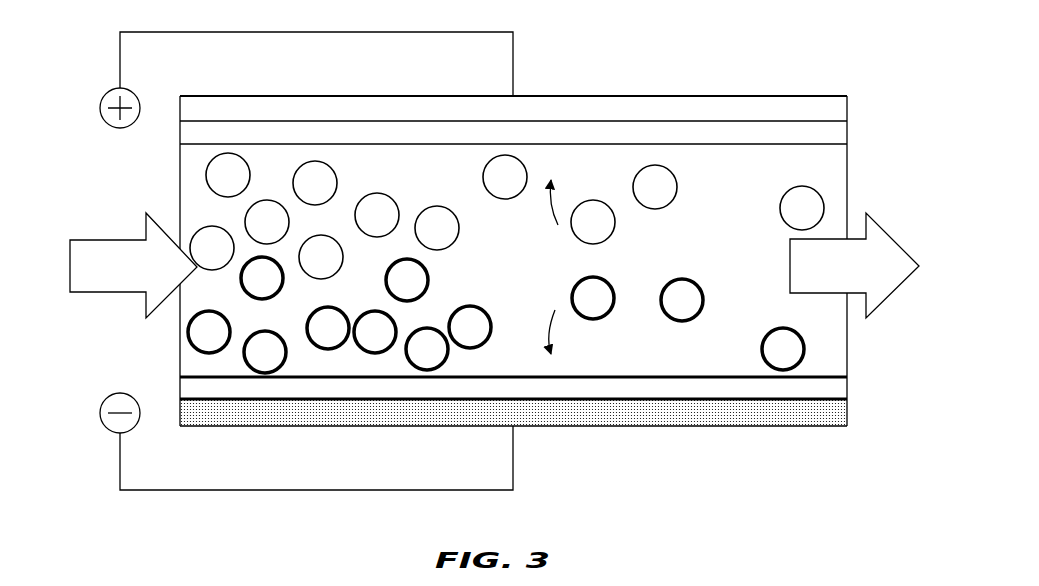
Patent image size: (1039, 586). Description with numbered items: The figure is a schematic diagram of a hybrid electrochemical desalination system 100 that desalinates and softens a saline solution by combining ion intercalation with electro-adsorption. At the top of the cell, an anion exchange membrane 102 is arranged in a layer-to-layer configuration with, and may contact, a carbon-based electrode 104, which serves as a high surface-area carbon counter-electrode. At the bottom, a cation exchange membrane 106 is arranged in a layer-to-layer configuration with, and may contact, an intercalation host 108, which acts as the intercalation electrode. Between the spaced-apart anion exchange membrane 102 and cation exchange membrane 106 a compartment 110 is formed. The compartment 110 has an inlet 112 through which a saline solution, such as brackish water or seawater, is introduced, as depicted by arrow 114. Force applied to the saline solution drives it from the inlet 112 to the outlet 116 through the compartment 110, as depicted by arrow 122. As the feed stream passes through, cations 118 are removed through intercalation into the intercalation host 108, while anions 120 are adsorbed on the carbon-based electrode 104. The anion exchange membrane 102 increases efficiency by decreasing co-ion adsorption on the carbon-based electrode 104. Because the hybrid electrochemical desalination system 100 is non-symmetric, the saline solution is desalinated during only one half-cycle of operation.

The hybrid electrochemical desalination system 100 is at (805, 460).
The anion exchange membrane 102 is at (180, 135).
The carbon-based electrode 104 is at (749, 96).
The cation exchange membrane 106 is at (851, 388).
The intercalation host 108 is at (748, 427).
The compartment 110 is at (747, 198).
The inlet 112 is at (196, 362).
The arrow 114 is at (65, 265).
The outlet 116 is at (837, 331).
The cations 118 is at (427, 370).
The anions 120 is at (824, 208).
The arrow 122 is at (895, 240).